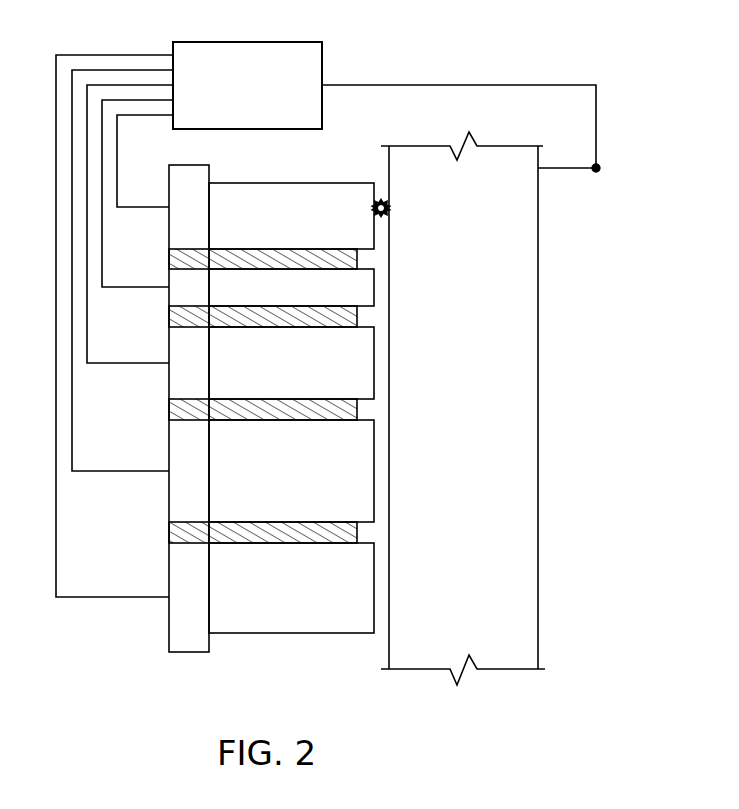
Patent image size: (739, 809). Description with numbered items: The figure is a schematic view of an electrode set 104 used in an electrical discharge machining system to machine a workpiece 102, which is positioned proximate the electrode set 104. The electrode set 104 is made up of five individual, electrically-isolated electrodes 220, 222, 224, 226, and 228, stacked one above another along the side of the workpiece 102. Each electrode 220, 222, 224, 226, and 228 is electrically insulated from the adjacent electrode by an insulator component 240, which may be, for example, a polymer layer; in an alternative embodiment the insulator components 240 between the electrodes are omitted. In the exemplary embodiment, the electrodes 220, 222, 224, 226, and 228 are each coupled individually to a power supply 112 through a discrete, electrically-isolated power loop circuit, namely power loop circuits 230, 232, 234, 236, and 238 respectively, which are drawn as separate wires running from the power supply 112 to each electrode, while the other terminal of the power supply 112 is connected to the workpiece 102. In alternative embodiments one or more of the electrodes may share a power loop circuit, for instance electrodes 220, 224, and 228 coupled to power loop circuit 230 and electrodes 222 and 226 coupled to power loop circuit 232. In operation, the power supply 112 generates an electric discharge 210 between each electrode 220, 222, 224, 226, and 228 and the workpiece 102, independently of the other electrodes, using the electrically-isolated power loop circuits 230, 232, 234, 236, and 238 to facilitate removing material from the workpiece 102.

The workpiece 102 is at (540, 582).
The electrode set 104 is at (250, 664).
The power supply 112 is at (322, 55).
The electric discharge 210 is at (391, 208).
The electrode 220 is at (271, 228).
The electrode 222 is at (271, 298).
The electrode 224 is at (271, 375).
The electrode 226 is at (271, 483).
The electrode 228 is at (271, 600).
The power loop circuit 230 is at (140, 207).
The power loop circuit 232 is at (135, 287).
The power loop circuit 234 is at (125, 363).
The power loop circuit 236 is at (117, 471).
The power loop circuit 238 is at (110, 597).
The insulator component 240 is at (359, 256).